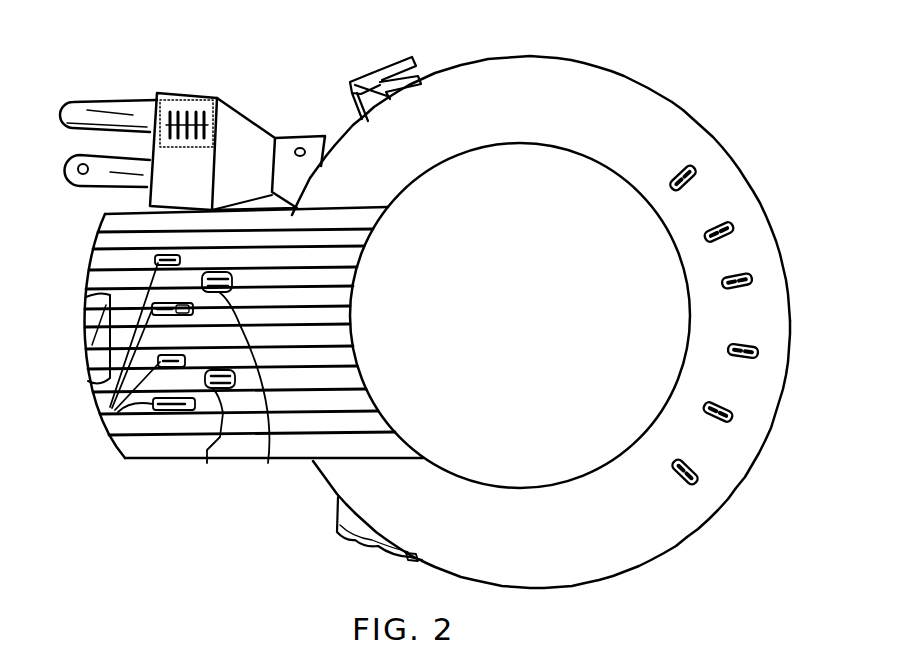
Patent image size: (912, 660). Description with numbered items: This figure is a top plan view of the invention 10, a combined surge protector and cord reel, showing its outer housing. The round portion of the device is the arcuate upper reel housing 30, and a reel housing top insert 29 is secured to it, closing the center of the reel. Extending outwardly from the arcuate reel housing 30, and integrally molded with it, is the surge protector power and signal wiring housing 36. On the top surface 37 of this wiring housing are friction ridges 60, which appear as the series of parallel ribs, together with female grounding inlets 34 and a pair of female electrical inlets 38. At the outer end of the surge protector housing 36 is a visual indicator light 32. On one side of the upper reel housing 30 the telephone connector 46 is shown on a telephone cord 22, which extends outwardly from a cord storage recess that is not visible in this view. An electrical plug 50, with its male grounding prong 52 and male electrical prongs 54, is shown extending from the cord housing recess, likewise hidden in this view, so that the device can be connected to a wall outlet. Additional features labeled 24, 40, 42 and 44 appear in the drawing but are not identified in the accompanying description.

The invention 10 is at (88, 70).
The telephone cord 22 is at (430, 76).
The mounting plate 24 is at (333, 146).
The reel housing top insert 29 is at (520, 316).
The arcuate upper reel housing 30 is at (600, 134).
The visual indicator light 32 is at (85, 326).
The female grounding inlets 34 is at (242, 382).
The surge protector power and signal wiring housing 36 is at (100, 224).
The top surface 37 is at (100, 270).
The female electrical inlets 38 is at (110, 412).
The annular ring 40 is at (598, 586).
The tab 42 is at (413, 558).
The flange 44 is at (340, 516).
The telephone connector 46 is at (359, 78).
The electrical plug 50 is at (250, 184).
The male grounding prong 52 is at (62, 110).
The male electrical prongs 54 is at (72, 190).
The friction ridges 60 is at (212, 431).